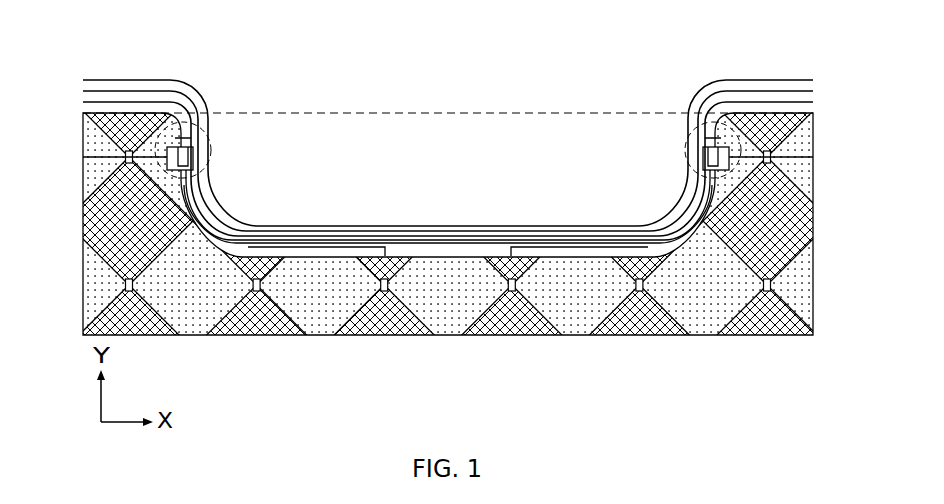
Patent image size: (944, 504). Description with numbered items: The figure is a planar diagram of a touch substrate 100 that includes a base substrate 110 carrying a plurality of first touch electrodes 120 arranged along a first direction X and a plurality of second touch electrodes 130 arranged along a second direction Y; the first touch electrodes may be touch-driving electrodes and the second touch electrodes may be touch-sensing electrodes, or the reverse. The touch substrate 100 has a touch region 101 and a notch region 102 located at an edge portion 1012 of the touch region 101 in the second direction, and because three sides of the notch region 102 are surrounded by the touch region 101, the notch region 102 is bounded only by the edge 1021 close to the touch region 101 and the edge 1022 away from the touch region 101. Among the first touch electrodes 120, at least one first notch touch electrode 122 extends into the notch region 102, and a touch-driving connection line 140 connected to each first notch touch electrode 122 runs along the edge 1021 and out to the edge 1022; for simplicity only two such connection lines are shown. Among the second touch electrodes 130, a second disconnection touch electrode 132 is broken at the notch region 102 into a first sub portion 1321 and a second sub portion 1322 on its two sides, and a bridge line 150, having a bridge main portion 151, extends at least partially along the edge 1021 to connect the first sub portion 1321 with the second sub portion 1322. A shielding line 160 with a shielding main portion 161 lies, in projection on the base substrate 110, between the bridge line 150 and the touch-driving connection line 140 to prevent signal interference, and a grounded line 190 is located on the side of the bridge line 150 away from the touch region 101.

The touch substrate 100 is at (448, 227).
The touch region 101 is at (448, 217).
The notch region 102 is at (264, 150).
The edge portion 1012 is at (448, 178).
The edge of the notch region close to the touch region 1021 is at (378, 335).
The edge of the notch region away from the touch region 1022 is at (408, 113).
The base substrate 110 is at (697, 26).
The first touch electrodes 120 is at (143, 335).
The first notch touch electrode 122 is at (267, 335).
The second touch electrodes 130 is at (497, 335).
The second disconnection touch electrode 132 is at (448, 99).
The first sub portion 1321 is at (98, 149).
The second sub portion 1322 is at (732, 140).
The touch-driving connection line 140 is at (315, 245).
The bridge line 150 is at (448, 169).
The bridge main portion 151 is at (400, 237).
The shielding line 160 is at (448, 192).
The shielding main portion 161 is at (253, 240).
The grounded line 190 is at (527, 225).